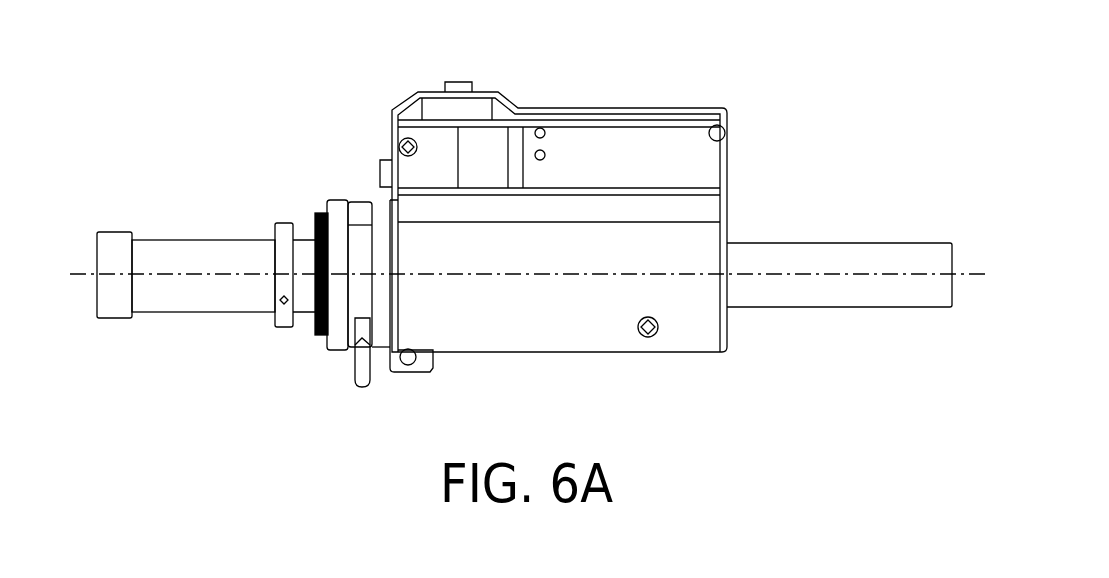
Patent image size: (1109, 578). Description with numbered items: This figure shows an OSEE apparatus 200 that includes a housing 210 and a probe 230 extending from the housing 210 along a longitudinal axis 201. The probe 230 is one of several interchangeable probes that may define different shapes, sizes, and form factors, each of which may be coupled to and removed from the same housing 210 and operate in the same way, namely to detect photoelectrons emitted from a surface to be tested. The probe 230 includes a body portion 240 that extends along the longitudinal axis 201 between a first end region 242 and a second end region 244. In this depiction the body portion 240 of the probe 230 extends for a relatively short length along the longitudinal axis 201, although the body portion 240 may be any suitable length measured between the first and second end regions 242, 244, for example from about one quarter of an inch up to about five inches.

The OSEE apparatus 200 is at (742, 92).
The longitudinal axis 201 is at (848, 274).
The housing 210 is at (612, 352).
The probe 230 is at (198, 358).
The body portion 240 is at (192, 240).
The first end region 242 is at (133, 240).
The second end region 244 is at (273, 240).